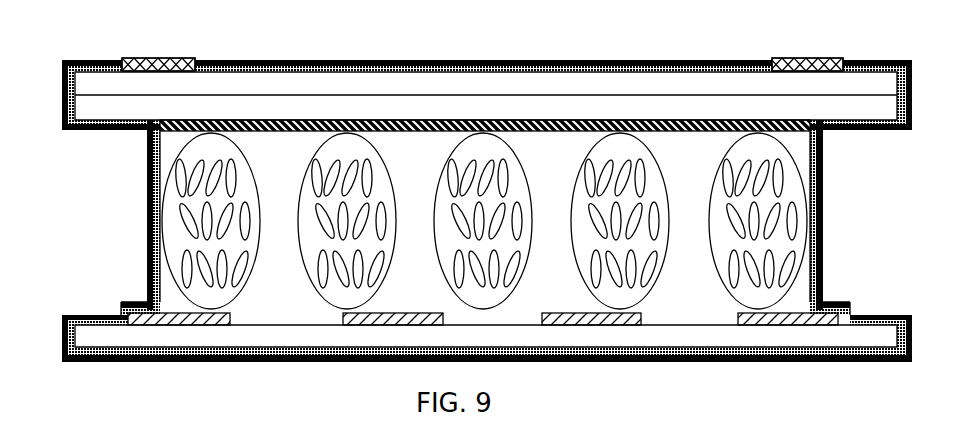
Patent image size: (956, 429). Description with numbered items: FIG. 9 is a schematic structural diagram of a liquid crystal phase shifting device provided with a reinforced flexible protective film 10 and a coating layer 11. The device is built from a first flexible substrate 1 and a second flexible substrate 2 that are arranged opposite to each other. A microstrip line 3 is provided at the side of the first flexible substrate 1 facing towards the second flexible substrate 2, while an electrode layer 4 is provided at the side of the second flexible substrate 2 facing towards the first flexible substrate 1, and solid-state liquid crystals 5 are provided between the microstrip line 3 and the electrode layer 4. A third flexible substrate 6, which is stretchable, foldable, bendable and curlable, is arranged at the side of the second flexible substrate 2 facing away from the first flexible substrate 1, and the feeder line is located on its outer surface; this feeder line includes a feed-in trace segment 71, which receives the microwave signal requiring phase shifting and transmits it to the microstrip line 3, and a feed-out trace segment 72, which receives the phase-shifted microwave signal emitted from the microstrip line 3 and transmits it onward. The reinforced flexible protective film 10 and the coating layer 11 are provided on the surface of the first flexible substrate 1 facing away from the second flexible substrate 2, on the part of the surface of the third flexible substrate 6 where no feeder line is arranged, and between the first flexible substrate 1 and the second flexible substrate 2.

The first flexible substrate 1 is at (77, 337).
The second flexible substrate 2 is at (75, 105).
The microstrip line 3 is at (122, 306).
The electrode layer 4 is at (147, 131).
The solid-state liquid crystals 5 is at (150, 217).
The third flexible substrate 6 is at (62, 73).
The reinforced flexible protective film 10 is at (823, 265).
The coating layer 11 is at (823, 233).
The feed-in trace segment 71 is at (170, 58).
The feed-out trace segment 72 is at (785, 58).